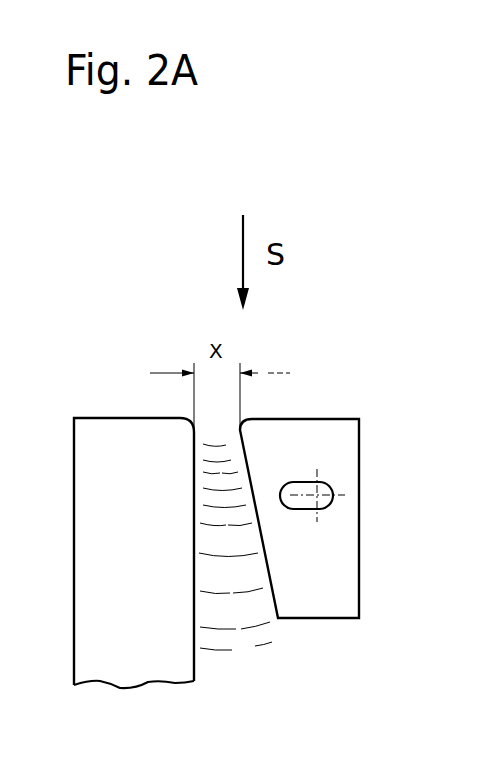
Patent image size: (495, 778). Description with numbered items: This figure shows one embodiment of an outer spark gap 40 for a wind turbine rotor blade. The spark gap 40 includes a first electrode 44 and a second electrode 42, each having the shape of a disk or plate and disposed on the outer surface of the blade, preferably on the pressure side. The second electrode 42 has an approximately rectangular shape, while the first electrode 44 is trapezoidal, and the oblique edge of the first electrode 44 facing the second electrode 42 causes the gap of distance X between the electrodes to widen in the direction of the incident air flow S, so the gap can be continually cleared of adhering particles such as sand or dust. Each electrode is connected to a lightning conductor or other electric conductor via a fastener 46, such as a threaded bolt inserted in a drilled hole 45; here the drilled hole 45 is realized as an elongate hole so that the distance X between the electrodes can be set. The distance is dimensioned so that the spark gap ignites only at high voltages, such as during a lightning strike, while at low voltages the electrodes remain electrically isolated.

The outer spark gap 40 is at (173, 273).
The second electrode 42 is at (126, 460).
The first electrode 44 is at (327, 575).
The drilled hole 45 is at (318, 482).
The fastener 46 is at (317, 495).